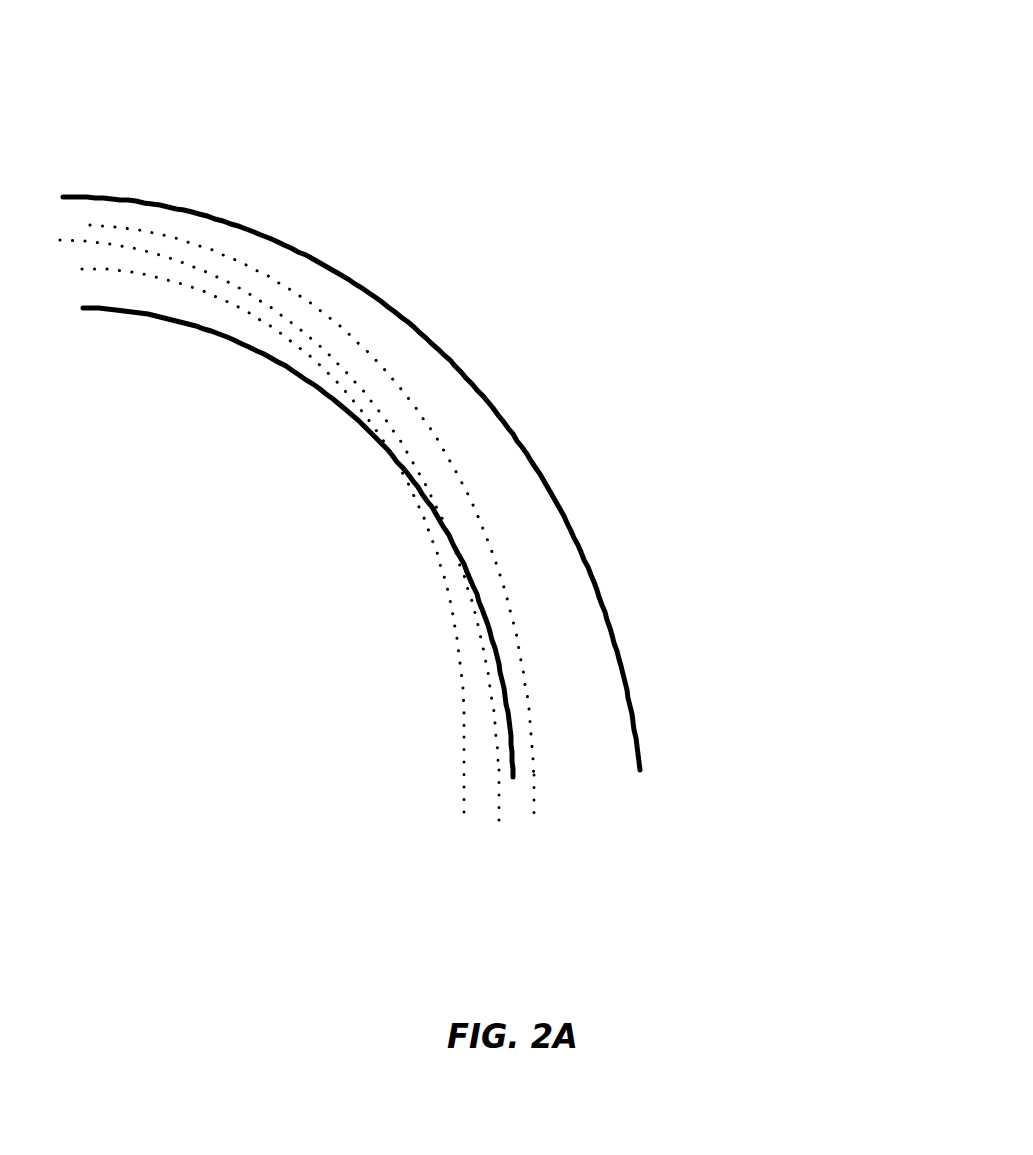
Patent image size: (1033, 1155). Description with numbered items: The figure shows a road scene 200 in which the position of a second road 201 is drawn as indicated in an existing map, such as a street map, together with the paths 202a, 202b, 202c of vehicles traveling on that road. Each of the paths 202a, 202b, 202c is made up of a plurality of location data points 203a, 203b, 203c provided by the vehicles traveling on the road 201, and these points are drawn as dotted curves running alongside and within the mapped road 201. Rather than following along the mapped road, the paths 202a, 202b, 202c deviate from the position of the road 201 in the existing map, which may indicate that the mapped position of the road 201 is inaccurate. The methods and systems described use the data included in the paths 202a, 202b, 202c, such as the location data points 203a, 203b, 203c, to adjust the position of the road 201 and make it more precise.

The optical fiber assembly 200 is at (373, 467).
The second road 201 is at (442, 340).
The path 202a is at (458, 828).
The path 202b is at (497, 805).
The path 202c is at (537, 782).
The location data points 203a is at (447, 593).
The location data points 203b is at (457, 640).
The location data points 203c is at (458, 692).